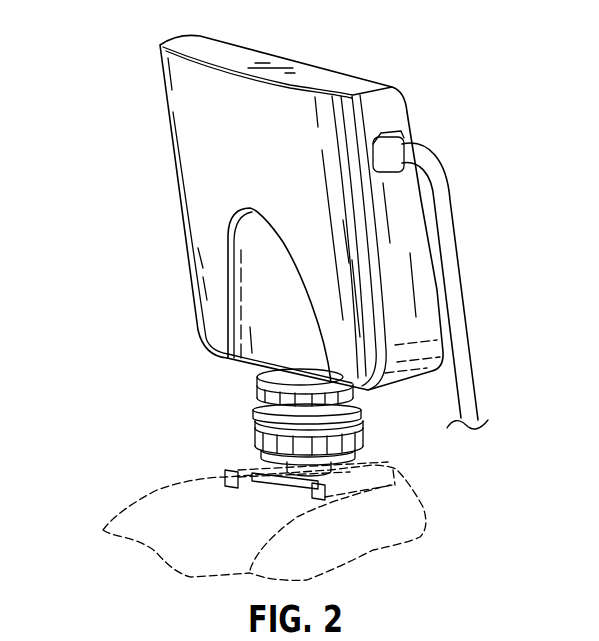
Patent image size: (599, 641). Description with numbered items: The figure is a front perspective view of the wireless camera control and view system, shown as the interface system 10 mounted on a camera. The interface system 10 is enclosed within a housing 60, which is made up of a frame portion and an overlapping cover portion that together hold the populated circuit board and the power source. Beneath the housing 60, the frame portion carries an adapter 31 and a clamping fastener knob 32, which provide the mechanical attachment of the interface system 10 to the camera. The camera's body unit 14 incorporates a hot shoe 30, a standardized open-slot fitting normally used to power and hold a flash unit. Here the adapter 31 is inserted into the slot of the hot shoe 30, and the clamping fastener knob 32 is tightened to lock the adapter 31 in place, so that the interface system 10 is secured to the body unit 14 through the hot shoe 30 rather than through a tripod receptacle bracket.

The interface system 10 is at (337, 72).
The body unit 14 is at (410, 528).
The hot shoe 30 is at (398, 472).
The adapter 31 is at (268, 483).
The clamping fastener knob 32 is at (257, 378).
The housing 60 is at (274, 272).